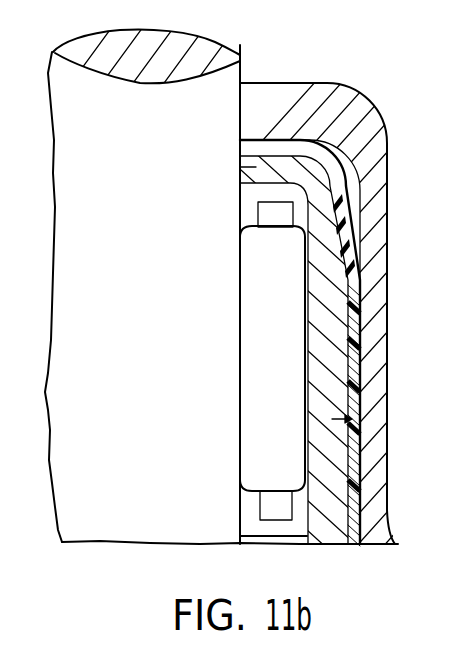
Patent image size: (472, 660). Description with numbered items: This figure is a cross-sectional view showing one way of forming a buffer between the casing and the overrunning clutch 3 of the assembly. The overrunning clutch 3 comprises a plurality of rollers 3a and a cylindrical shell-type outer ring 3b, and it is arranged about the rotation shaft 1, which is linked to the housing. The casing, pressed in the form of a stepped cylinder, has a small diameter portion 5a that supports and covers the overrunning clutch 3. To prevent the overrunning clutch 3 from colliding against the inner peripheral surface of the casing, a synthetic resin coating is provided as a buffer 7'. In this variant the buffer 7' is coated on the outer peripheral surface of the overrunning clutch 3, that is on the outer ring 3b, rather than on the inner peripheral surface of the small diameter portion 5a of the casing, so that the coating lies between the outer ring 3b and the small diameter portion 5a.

The rotation shaft 1 is at (212, 516).
The overrunning clutch 3 is at (240, 150).
The rollers 3a is at (290, 353).
The outer ring 3b is at (372, 445).
The small diameter portion 5a is at (361, 137).
The buffer 7' is at (325, 342).